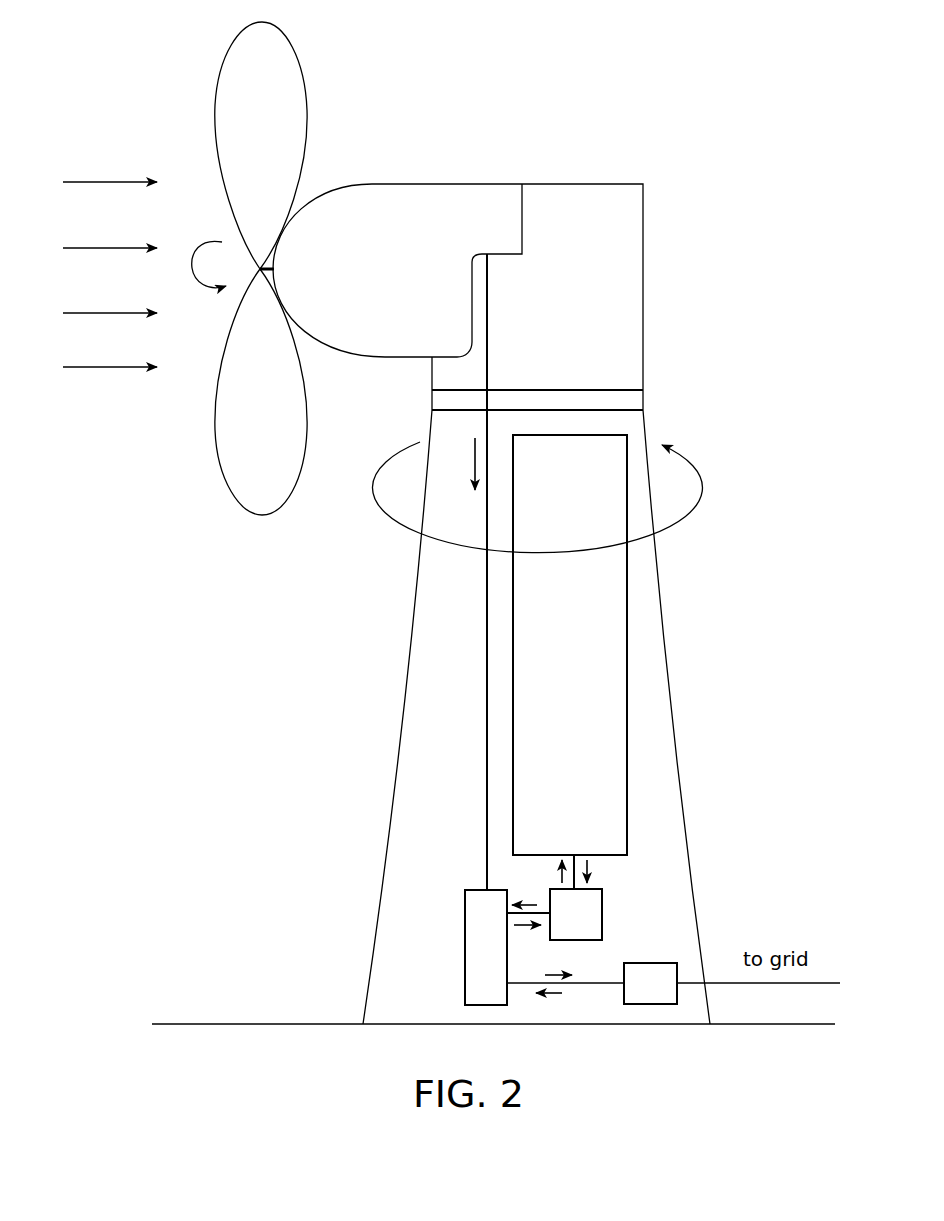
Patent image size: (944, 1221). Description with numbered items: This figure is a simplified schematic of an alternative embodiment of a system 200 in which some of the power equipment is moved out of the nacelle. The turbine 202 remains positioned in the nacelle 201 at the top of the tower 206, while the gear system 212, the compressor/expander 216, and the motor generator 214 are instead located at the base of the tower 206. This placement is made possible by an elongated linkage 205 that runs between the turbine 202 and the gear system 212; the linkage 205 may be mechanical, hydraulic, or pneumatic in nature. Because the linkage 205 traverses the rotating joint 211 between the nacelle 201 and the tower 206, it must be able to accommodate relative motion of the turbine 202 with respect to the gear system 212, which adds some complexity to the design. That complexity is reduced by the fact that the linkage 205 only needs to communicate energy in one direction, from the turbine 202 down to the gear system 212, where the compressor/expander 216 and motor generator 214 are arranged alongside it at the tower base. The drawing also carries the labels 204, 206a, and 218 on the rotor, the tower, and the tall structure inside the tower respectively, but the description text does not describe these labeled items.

The system 200 is at (668, 102).
The nacelle 201 is at (597, 182).
The turbine 202 is at (398, 195).
The rotor blades 204 is at (280, 47).
The elongated linkage 205 is at (489, 336).
The tower 206 is at (672, 695).
The tower interior 206a is at (640, 630).
The rotating joint 211 is at (645, 398).
The gear system 212 is at (465, 948).
The motor generator 214 is at (655, 963).
The compressor/expander 216 is at (603, 895).
The energy storage tank 218 is at (590, 812).